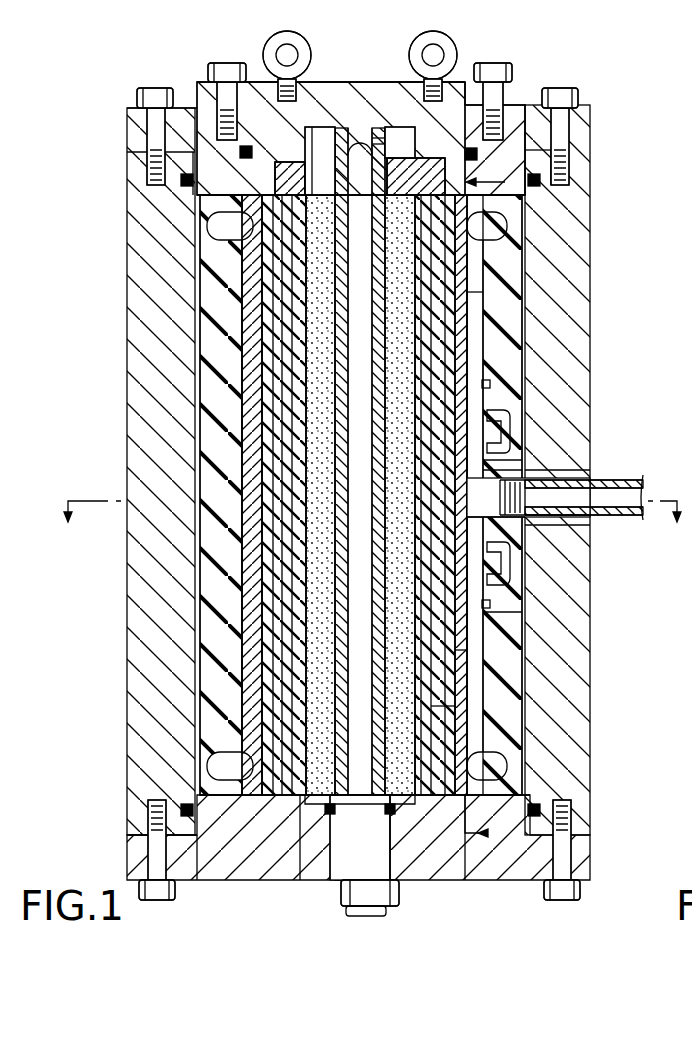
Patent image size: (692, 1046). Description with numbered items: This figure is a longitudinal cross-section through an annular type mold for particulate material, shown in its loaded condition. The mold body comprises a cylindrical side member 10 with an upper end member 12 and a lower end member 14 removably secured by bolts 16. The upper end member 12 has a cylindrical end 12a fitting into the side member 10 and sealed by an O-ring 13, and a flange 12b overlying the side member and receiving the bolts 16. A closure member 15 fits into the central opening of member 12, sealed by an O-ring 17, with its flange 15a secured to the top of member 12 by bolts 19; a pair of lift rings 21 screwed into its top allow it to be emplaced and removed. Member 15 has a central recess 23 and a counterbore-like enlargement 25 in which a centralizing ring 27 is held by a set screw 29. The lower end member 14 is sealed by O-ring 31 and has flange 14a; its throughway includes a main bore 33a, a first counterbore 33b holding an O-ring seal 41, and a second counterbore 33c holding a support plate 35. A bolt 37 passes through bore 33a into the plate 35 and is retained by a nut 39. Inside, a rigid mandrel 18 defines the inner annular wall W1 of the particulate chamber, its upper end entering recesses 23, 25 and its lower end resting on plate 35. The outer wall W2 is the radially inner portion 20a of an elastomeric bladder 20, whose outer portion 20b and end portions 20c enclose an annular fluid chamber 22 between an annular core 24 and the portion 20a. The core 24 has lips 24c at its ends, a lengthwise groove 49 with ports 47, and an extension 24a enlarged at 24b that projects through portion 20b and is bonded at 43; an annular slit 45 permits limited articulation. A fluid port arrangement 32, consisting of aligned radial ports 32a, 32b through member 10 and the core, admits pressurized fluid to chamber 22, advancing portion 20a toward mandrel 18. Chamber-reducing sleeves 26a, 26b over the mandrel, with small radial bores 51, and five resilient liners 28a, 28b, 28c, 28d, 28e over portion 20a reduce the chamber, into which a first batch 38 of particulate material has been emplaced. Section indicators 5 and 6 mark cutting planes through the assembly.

The cylindrical side member 10 is at (582, 253).
The upper end member 12 is at (535, 110).
The cylindrical end 12a is at (545, 178).
The flange 12b is at (190, 120).
The O-ring 13 is at (540, 180).
The lower end member 14 is at (515, 862).
The flange 14a is at (135, 850).
The closure member 15 is at (325, 95).
The flange 15a is at (520, 80).
The bolts 16 is at (160, 124).
The O-ring 17 is at (175, 150).
The mandrel 18 is at (370, 318).
The bolts 19 is at (226, 64).
The elastomeric bladder 20 is at (190, 274).
The inner portion of bladder 20a is at (460, 656).
The outer portion of bladder 20b is at (490, 612).
The end portions of bladder 20c is at (520, 214).
The lift rings 21 is at (280, 44).
The annular fluid chamber means 22 is at (245, 466).
The central recess 23 is at (395, 140).
The annular core 24 is at (245, 638).
The extension 24a is at (495, 468).
The enlargement of projection 24b is at (510, 440).
The lips 24c is at (220, 226).
The counterbore-like enlargement 25 is at (565, 146).
The chamber-reducing sleeve 26a is at (300, 572).
The chamber-reducing sleeve 26b is at (320, 596).
The centralizing ring 27 is at (322, 170).
The liner 28a is at (268, 306).
The liner 28b is at (276, 336).
The liner 28c is at (284, 364).
The liner 28d is at (292, 394).
The liner 28e is at (300, 422).
The set screw 29 is at (181, 180).
The O-ring 31 is at (540, 808).
The inlet pipe 32 is at (640, 496).
The radial port 32a is at (590, 520).
The radial port 32b is at (500, 562).
The main bore 33a is at (400, 885).
The first counterbore 33b is at (466, 858).
The second counterbore 33c is at (232, 880).
The support plate 35 is at (275, 792).
The bolt 37 is at (374, 835).
The first batch of particulate material 38 is at (318, 620).
The nut 39 is at (341, 903).
The O-ring seal 41 is at (300, 880).
The bond 43 is at (515, 500).
The annular slit 45 is at (500, 415).
The ports 47 is at (490, 384).
The lengthwise groove 49 is at (455, 706).
The radial bores 51 is at (375, 128).
The inner annular lateral wall W1 is at (475, 292).
The outer annular lateral wall W2 is at (435, 706).
The section line 5- 5 is at (372, 525).
The section line 6- 6 is at (492, 507).